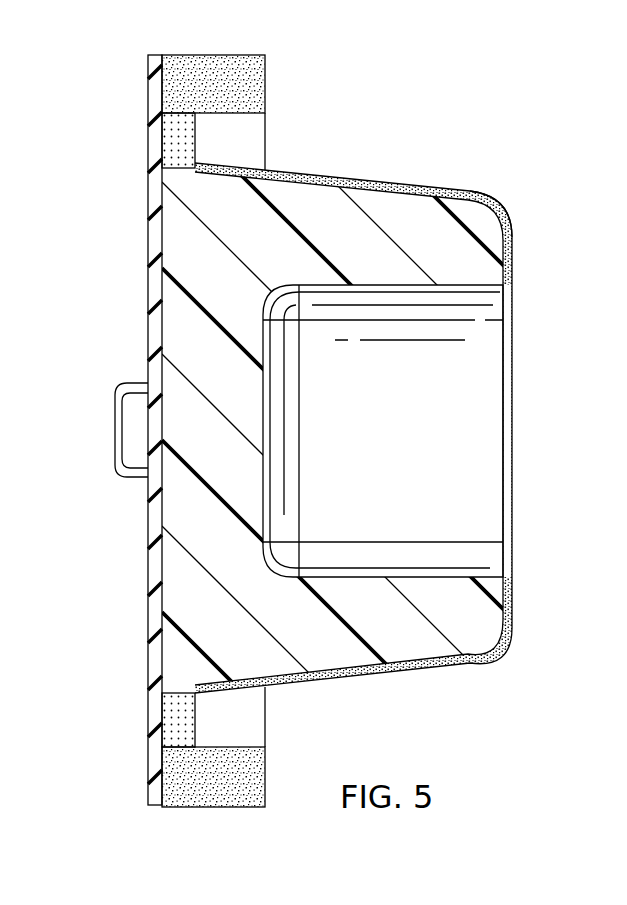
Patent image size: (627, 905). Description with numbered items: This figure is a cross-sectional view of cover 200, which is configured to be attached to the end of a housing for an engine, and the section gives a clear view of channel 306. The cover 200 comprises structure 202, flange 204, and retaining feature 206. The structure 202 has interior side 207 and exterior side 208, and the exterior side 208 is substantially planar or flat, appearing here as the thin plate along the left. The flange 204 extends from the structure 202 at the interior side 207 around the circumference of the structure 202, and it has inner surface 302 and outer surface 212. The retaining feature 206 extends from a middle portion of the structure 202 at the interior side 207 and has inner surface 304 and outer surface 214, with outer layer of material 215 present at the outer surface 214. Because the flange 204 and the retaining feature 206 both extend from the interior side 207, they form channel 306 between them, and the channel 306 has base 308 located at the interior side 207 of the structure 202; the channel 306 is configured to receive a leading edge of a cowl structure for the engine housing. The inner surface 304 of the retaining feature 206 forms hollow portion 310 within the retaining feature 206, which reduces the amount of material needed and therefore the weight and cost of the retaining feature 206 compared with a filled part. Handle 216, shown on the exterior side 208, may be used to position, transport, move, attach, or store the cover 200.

The cover 200 is at (440, 98).
The structure 202 is at (140, 662).
The flange 204 is at (210, 807).
The retaining feature 206 is at (330, 180).
The interior side 207 is at (163, 543).
The exterior side 208 is at (148, 567).
The outer surface 212 is at (213, 55).
The outer surface 214 is at (394, 184).
The outer layer of material 215 is at (463, 186).
The handle 216 is at (116, 428).
The inner surface 302 is at (244, 122).
The inner surface 304 is at (483, 395).
The channel 306 is at (247, 708).
The base 308 is at (210, 723).
The hollow portion 310 is at (482, 487).